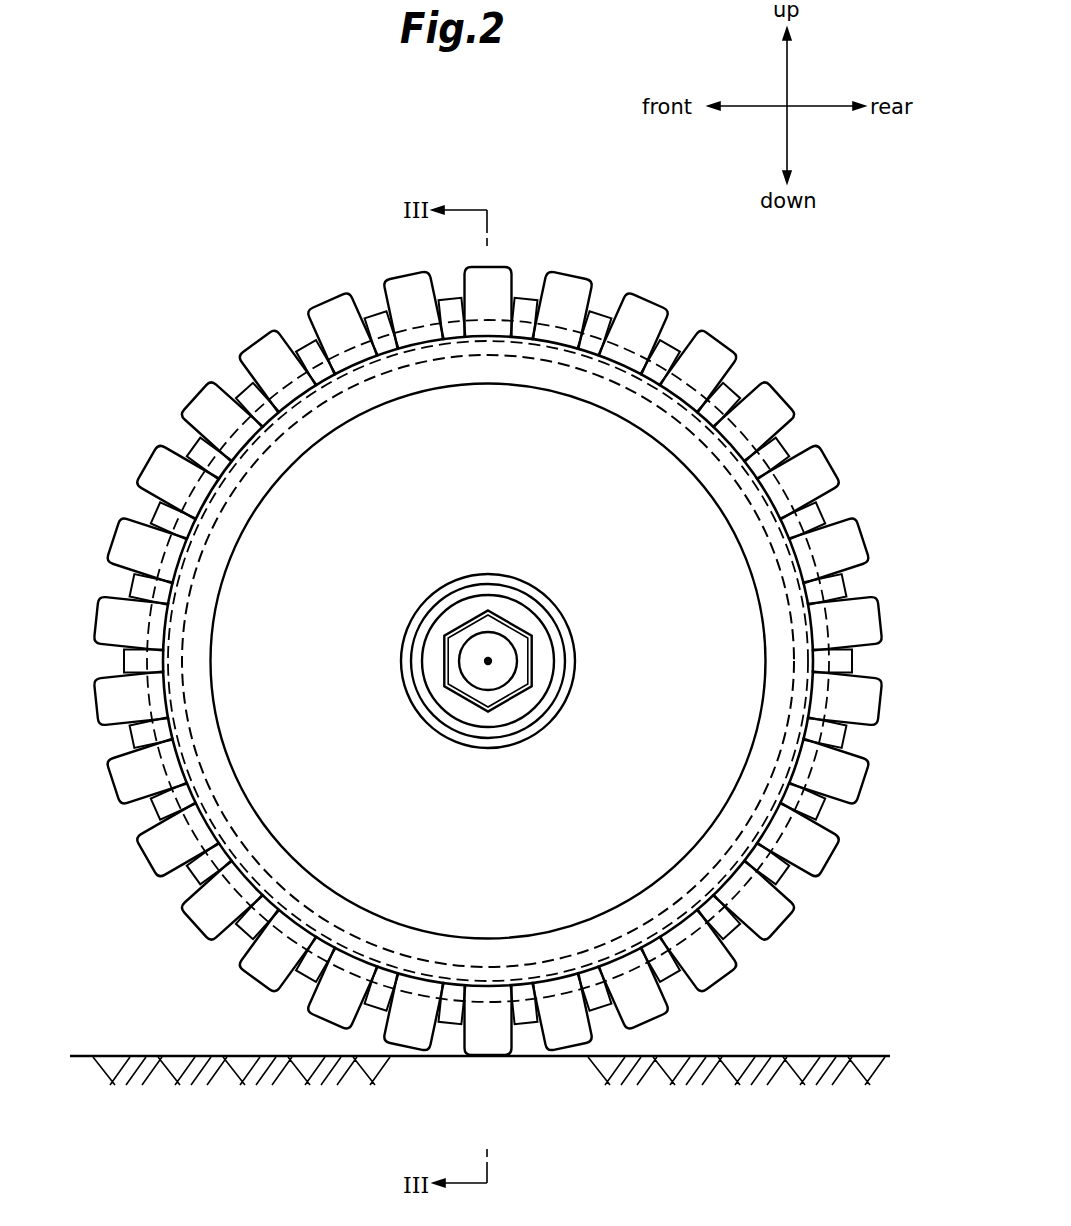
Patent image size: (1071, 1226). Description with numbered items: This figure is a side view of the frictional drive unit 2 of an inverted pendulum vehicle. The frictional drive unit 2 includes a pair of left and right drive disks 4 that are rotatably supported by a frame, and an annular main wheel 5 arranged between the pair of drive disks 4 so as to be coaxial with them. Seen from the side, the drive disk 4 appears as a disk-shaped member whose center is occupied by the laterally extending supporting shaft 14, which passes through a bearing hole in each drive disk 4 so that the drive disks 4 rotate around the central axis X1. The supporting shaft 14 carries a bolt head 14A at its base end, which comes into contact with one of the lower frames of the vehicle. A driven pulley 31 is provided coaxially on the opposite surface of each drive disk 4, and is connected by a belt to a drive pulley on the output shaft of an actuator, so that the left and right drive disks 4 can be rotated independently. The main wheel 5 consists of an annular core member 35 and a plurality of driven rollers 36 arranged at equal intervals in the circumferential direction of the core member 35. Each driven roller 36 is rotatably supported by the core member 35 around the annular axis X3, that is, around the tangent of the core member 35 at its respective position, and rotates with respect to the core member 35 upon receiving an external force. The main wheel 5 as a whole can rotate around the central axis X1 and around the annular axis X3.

The frictional drive unit 2 is at (278, 300).
The drive disk 4 is at (312, 604).
The main wheel 5 is at (529, 702).
The supporting shaft 14 is at (476, 647).
The bolt head 14A is at (468, 698).
The driven pulley 31 is at (274, 858).
The core member 35 is at (631, 350).
The driven roller 36 is at (877, 617).
The axis X1 is at (489, 662).
The axis X3 is at (780, 478).